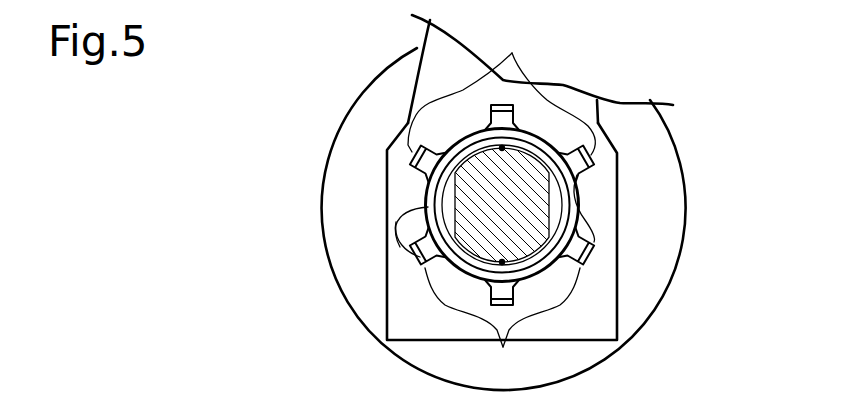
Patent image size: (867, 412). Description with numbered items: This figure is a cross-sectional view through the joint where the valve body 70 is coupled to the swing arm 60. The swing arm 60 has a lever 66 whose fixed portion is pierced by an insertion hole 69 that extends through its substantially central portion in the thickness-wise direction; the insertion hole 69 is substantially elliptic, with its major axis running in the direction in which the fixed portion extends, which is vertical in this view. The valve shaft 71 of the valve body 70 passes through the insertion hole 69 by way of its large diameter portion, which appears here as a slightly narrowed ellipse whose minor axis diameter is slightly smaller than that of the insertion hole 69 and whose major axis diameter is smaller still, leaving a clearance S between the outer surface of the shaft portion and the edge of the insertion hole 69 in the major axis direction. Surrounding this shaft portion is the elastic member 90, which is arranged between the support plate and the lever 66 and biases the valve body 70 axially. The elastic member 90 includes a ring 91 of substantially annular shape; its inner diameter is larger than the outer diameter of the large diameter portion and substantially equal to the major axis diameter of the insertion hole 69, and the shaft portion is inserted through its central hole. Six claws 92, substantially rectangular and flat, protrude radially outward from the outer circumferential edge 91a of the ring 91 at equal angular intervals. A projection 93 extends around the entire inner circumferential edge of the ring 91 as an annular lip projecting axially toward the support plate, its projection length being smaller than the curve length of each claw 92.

The swing arm 60 is at (586, 340).
The lever 66 is at (617, 296).
The insertion hole 69 is at (502, 150).
The valve body 70 is at (336, 132).
The valve shaft 71 is at (538, 207).
The elastic member 90 is at (606, 159).
The ring 91 is at (576, 200).
The outer circumferential edge 91a is at (394, 228).
The claws 92 is at (503, 104).
The projection 93 is at (575, 182).
The clearance S is at (502, 150).